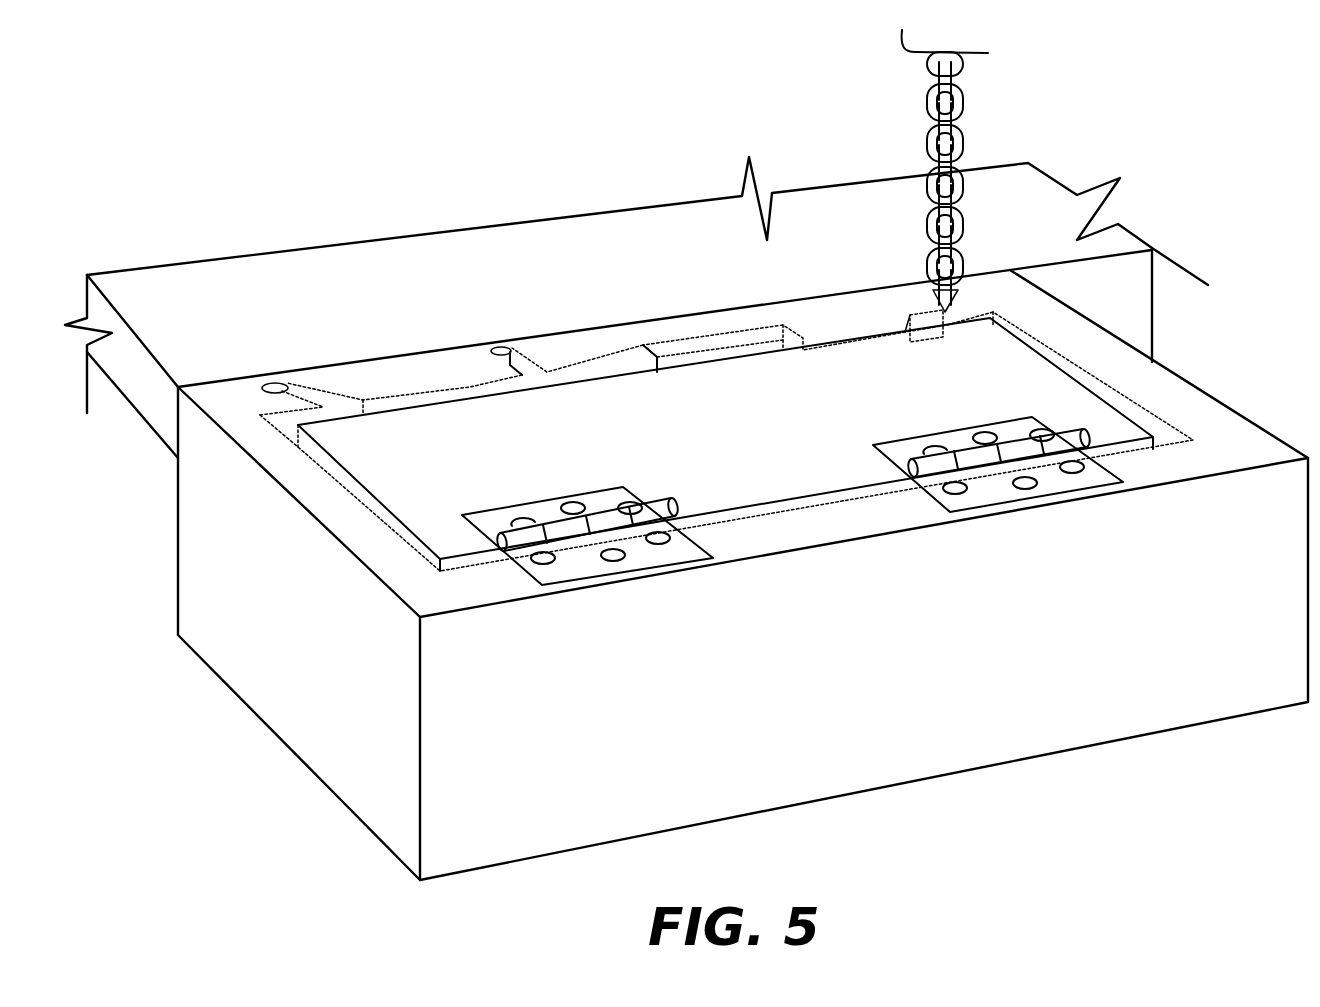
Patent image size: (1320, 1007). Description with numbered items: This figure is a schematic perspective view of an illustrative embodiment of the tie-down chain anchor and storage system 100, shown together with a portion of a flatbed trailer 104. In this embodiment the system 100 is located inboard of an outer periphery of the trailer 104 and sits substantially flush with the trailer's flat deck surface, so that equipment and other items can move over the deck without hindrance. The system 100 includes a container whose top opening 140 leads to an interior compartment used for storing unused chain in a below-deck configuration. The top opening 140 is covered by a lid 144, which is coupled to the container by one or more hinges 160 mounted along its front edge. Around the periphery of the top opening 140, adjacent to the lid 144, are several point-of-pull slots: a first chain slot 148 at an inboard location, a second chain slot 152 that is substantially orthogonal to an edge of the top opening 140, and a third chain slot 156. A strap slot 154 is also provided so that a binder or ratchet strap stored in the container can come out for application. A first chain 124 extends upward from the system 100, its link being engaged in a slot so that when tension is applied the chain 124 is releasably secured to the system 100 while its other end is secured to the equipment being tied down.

The tie-down chain anchor and storage system 100 is at (1251, 449).
The flatbed trailer 104 is at (1022, 203).
The first chain 124 is at (963, 108).
The top opening 140 is at (1105, 380).
The lid 144 is at (437, 423).
The first chain slot 148 is at (280, 383).
The second chain slot 152 is at (498, 348).
The strap slot 154 is at (680, 350).
The third chain slot 156 is at (932, 313).
The hinge 160 is at (672, 550).